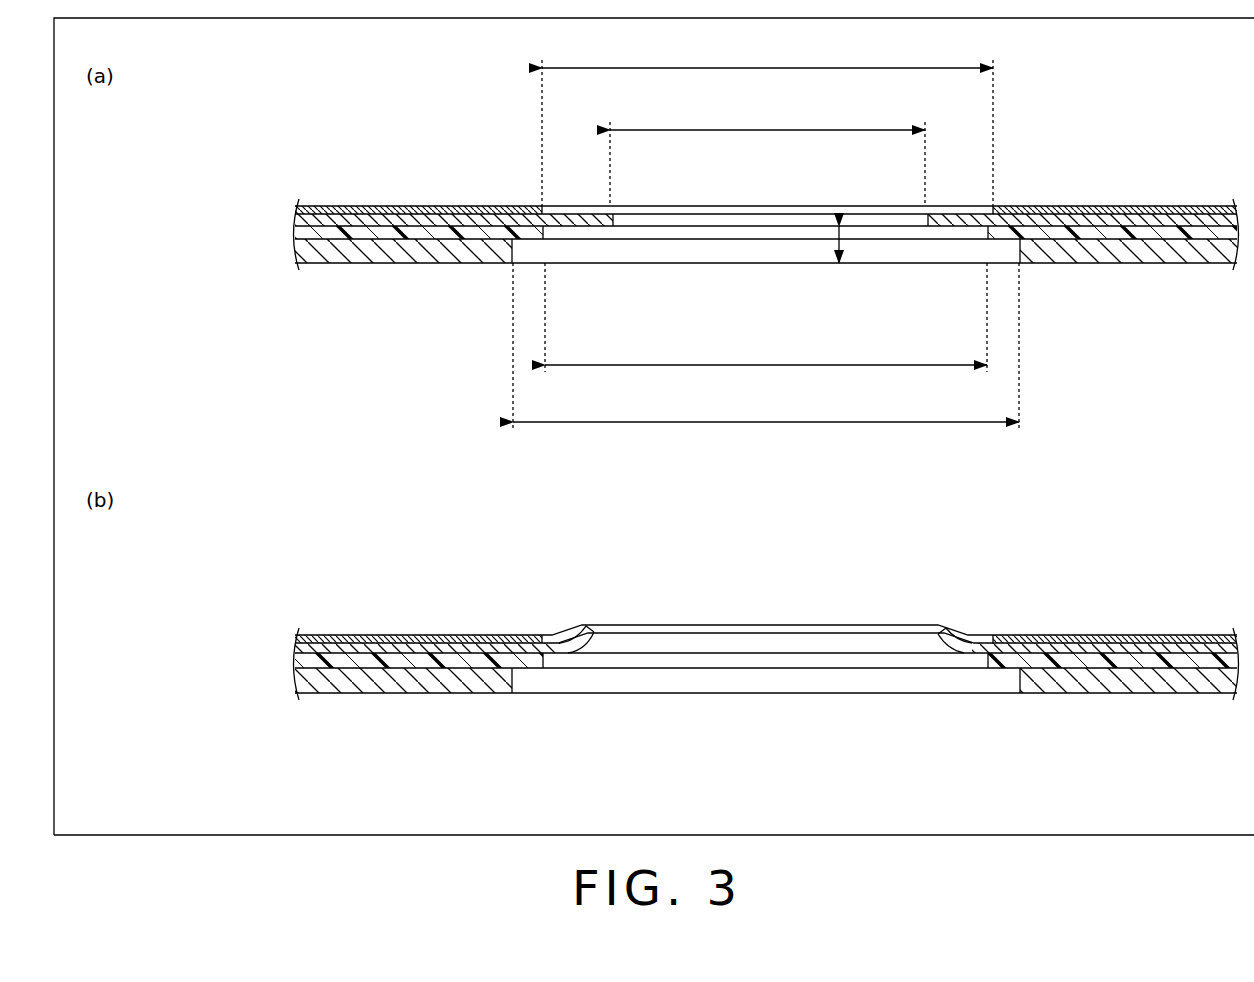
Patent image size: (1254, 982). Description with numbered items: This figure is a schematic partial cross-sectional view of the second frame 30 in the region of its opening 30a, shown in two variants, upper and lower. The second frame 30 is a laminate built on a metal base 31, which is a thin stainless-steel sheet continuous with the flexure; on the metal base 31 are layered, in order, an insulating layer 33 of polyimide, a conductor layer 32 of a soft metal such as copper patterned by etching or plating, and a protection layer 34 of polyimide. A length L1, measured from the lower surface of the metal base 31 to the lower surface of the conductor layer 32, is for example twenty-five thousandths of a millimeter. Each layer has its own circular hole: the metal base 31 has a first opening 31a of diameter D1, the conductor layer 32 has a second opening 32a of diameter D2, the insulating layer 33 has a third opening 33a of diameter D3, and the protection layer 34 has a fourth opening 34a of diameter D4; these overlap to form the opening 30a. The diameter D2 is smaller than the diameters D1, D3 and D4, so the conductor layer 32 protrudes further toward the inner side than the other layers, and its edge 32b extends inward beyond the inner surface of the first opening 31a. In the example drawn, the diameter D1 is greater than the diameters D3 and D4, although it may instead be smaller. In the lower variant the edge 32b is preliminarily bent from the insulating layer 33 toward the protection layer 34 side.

The second frame 30 is at (190, 293).
The metal base 31 is at (296, 252).
The conductor layer 32 is at (300, 220).
The insulating layer 33 is at (298, 232).
The protection layer 34 is at (322, 205).
The opening 30a is at (890, 197).
The first opening 31a is at (513, 252).
The second opening 32a is at (613, 218).
The edge 32b is at (962, 222).
The third opening 33a is at (545, 232).
The fourth opening 34a is at (542, 206).
The length L1 is at (836, 245).
The diameter of the first opening D1 is at (766, 345).
The diameter of the second opening D2 is at (767, 155).
The diameter of the third opening D3 is at (766, 317).
The diameter of the fourth opening D4 is at (767, 123).